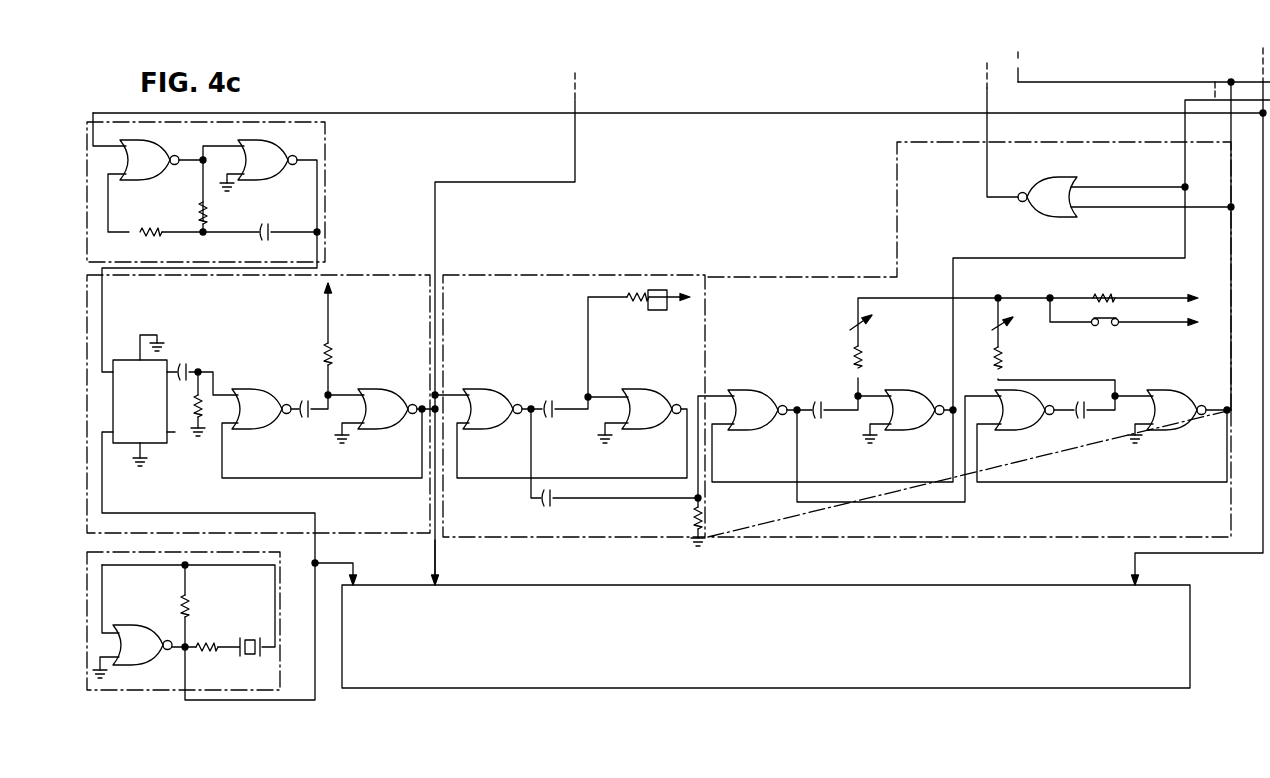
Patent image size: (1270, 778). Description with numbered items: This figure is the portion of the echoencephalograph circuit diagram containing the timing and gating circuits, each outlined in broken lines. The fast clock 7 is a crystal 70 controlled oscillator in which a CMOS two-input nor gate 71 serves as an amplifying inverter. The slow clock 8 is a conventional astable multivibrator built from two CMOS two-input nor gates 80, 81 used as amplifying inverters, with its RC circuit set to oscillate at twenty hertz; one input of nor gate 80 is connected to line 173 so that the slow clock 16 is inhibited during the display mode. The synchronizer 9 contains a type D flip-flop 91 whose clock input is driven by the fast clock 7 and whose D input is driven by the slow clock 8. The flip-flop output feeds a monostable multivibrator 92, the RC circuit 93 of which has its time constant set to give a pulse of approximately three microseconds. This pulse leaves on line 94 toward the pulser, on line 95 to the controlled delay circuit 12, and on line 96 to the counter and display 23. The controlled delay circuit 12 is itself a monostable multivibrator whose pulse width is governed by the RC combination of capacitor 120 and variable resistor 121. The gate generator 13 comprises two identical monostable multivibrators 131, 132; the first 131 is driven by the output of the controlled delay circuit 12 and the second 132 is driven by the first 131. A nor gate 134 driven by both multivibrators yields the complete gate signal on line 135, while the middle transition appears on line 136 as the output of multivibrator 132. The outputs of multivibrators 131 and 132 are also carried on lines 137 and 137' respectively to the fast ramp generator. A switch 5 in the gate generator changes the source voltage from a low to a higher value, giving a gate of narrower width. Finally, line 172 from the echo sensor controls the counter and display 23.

The switch 5 is at (1112, 327).
The fast clock 7 is at (191, 621).
The slow clock 8 is at (217, 187).
The synchronizer 9 is at (261, 474).
The controlled delay circuit 12 is at (588, 397).
The gate generator 13 is at (989, 297).
The slow clock 16 is at (93, 128).
The counter and display 23 is at (953, 587).
The crystal 70 is at (245, 645).
The two-input nor gate 71 is at (137, 623).
The nor gate 80 is at (157, 176).
The nor gate 81 is at (277, 177).
The type D flip-flop 91 is at (155, 444).
The monostable multivibrator 92 is at (340, 435).
The RC circuit 93 is at (326, 353).
The line 94 is at (584, 98).
The line 95 is at (444, 394).
The line 96 is at (437, 565).
The capacitor 120 is at (553, 391).
The variable resistor 121 is at (667, 290).
The monostable multivibrator 131 is at (845, 432).
The monostable multivibrator 132 is at (1050, 434).
The nor gate 134 is at (1063, 218).
The line 135 is at (986, 94).
The line 136 is at (1018, 68).
The line 137 is at (1196, 82).
The line 137' is at (1234, 227).
The line 172 is at (1154, 555).
The line 173 is at (463, 113).